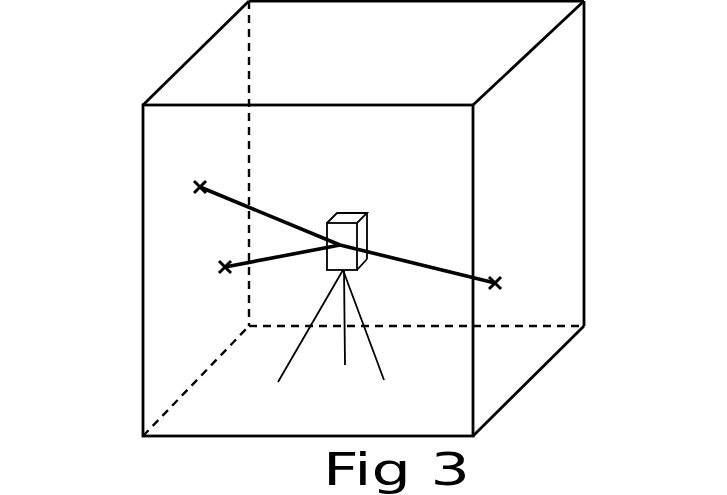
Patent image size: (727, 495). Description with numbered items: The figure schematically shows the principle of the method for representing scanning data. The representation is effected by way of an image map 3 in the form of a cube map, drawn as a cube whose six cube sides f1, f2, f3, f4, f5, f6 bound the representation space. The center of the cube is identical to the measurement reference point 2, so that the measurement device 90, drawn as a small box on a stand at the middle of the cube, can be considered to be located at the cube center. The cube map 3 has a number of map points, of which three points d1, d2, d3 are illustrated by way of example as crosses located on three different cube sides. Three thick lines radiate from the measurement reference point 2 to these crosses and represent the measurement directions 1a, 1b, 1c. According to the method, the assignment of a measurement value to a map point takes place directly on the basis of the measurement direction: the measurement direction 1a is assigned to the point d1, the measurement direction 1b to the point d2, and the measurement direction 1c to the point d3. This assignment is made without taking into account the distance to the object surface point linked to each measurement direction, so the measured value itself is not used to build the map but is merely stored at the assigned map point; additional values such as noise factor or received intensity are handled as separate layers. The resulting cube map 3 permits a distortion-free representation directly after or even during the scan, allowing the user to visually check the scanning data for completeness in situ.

The image map 3 is at (395, 218).
The measurement reference point 2 is at (344, 247).
The measurement device 90 is at (423, 190).
The measurement direction 1a is at (289, 192).
The measurement direction 1b is at (297, 334).
The measurement direction 1c is at (470, 329).
The map point d1 is at (200, 187).
The map point d2 is at (129, 289).
The map point d3 is at (566, 245).
The cube side f1 is at (211, 66).
The cube side f2 is at (173, 132).
The cube side f3 is at (532, 96).
The cube side f4 is at (291, 22).
The cube side f5 is at (213, 407).
The cube side f6 is at (462, 82).